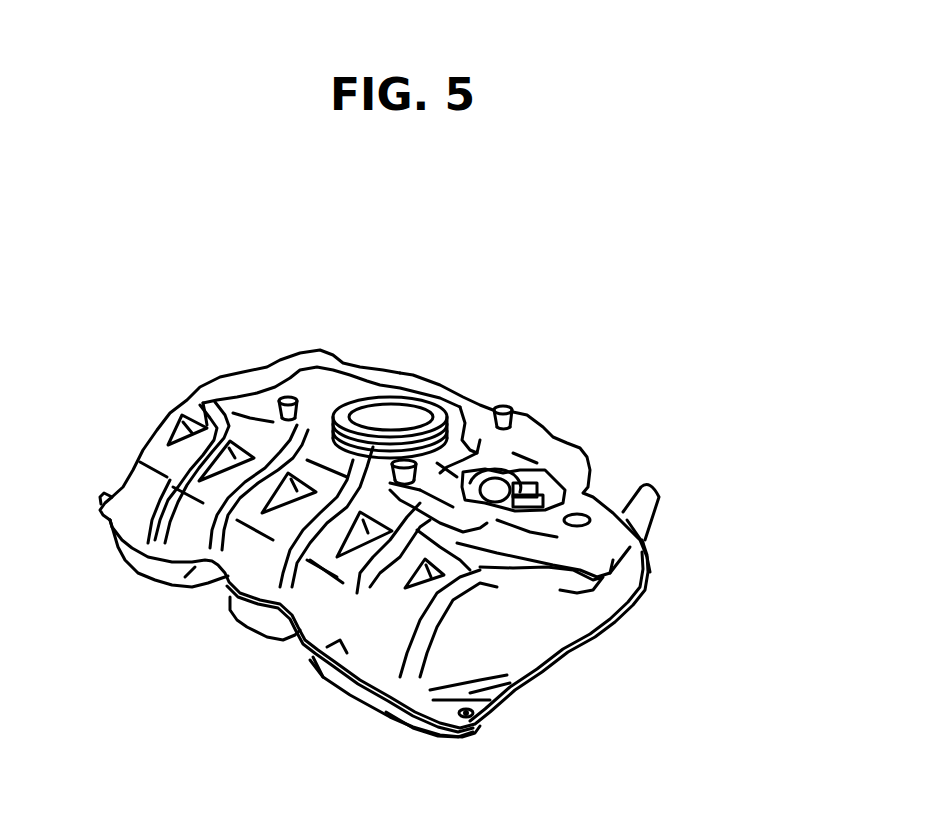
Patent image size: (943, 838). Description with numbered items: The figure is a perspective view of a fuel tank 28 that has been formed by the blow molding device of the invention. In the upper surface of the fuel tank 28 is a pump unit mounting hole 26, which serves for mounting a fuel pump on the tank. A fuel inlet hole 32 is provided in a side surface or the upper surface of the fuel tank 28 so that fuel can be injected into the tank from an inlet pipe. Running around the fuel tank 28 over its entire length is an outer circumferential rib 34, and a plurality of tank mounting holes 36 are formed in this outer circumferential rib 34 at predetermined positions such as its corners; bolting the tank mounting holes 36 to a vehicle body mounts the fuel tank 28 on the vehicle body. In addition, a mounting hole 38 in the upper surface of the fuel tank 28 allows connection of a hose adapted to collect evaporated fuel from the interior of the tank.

The pump unit mounting hole 26 is at (345, 405).
The fuel tank 28 is at (232, 648).
The fuel inlet hole 32 is at (647, 505).
The outer circumferential rib 34 is at (490, 728).
The tank mounting holes 36 is at (513, 695).
The mounting hole 38 is at (525, 486).